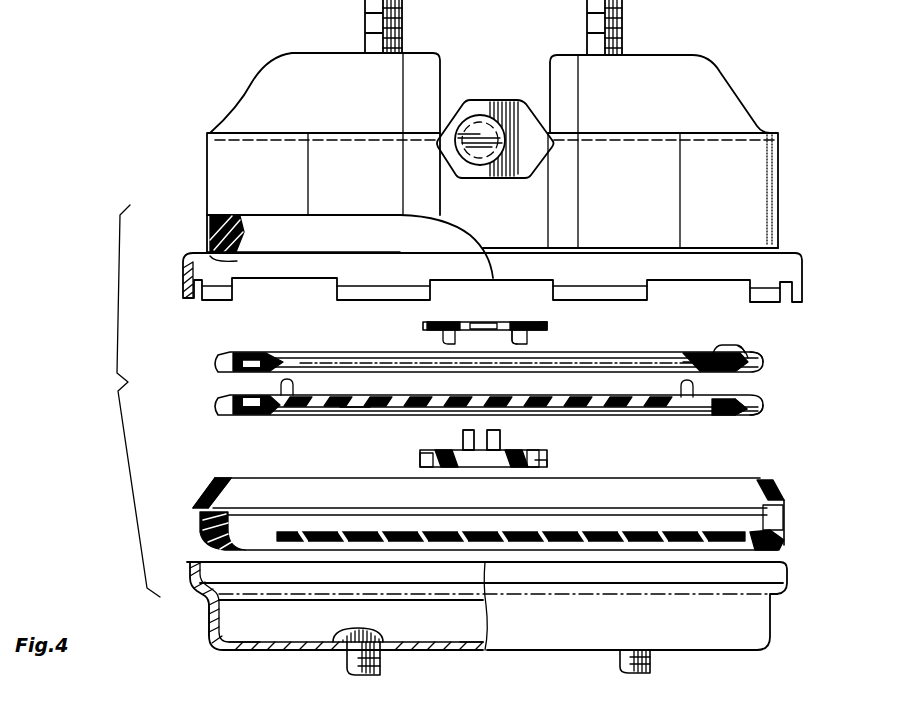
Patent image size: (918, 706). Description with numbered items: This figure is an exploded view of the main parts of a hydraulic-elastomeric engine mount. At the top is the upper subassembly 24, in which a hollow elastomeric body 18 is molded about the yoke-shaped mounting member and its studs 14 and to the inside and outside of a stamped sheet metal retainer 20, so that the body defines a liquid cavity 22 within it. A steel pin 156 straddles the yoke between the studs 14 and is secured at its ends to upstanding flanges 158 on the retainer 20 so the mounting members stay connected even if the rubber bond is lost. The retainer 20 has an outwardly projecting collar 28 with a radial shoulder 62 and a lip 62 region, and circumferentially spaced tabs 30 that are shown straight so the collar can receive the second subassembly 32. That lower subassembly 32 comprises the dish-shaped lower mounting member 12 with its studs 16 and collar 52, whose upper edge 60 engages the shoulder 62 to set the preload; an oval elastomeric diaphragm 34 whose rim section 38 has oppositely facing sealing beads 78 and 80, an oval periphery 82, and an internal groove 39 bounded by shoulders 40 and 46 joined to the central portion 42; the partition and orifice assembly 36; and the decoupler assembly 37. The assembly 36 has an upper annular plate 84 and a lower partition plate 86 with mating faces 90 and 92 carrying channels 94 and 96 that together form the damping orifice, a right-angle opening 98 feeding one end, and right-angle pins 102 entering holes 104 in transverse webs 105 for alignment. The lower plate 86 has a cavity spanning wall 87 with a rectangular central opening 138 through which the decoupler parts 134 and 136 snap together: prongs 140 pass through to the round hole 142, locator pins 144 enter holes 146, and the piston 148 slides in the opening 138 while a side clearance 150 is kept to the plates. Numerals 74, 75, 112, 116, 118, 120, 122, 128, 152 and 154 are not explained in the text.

The stamped sheet metal mounting member 12 is at (770, 632).
The studs 14 is at (365, 6).
The studs 16 is at (380, 668).
The elastomeric body 18 is at (248, 108).
The retainer 20 is at (214, 234).
The hollow cavity 22 is at (240, 214).
The subassembly 24 is at (790, 206).
The collar 28 is at (186, 272).
The tabs 30 is at (205, 301).
The second subassembly 32 is at (223, 446).
The elastomeric diaphragm 34 is at (767, 487).
The partition and orifice assembly 36 is at (211, 387).
The hydraulic damping decoupler assembly 37 is at (547, 320).
The annular rim section 38 is at (778, 490).
The internal groove 39 is at (648, 512).
The shoulder 40 is at (232, 484).
The central portion 42 is at (597, 484).
The shoulder 46 is at (770, 538).
The collar 52 is at (763, 572).
The upper edge 60 is at (448, 558).
The radial shoulder 62 is at (210, 262).
The housing wall 74 is at (212, 628).
The housing bottom 75 is at (257, 644).
The sealing bead 78 is at (213, 480).
The sealing bead 80 is at (203, 530).
The oval periphery 82 is at (200, 525).
The upper annular plate 84 is at (716, 356).
The lower partition plate 86 is at (730, 418).
The cavity spanning wall 87 is at (352, 405).
The mating face 90 is at (765, 362).
The mating face 92 is at (765, 405).
The channel 94 is at (742, 352).
The channel 96 is at (728, 413).
The right-angle opening 98 is at (296, 700).
The right-angle pins 102 is at (284, 382).
The holes 104 is at (283, 352).
The transverse webs 105 is at (300, 352).
The element 112 is at (860, 700).
The element 116 is at (790, 700).
The element 118 is at (517, 700).
The element 120 is at (570, 700).
The element 122 is at (610, 700).
The element 128 is at (745, 700).
The upper decoupler part 134 is at (510, 322).
The lower decoupler part 136 is at (533, 447).
The central opening 138 is at (530, 397).
The upstanding prongs 140 is at (468, 440).
The central round hole 142 is at (480, 322).
The locator pins 144 is at (512, 333).
The holes 146 is at (445, 442).
The piston 148 is at (424, 458).
The side clearance 150 is at (163, 696).
The leg 152 is at (525, 343).
The foot 154 is at (538, 466).
The steel pin 156 is at (480, 128).
The upstanding flanges 158 is at (524, 98).